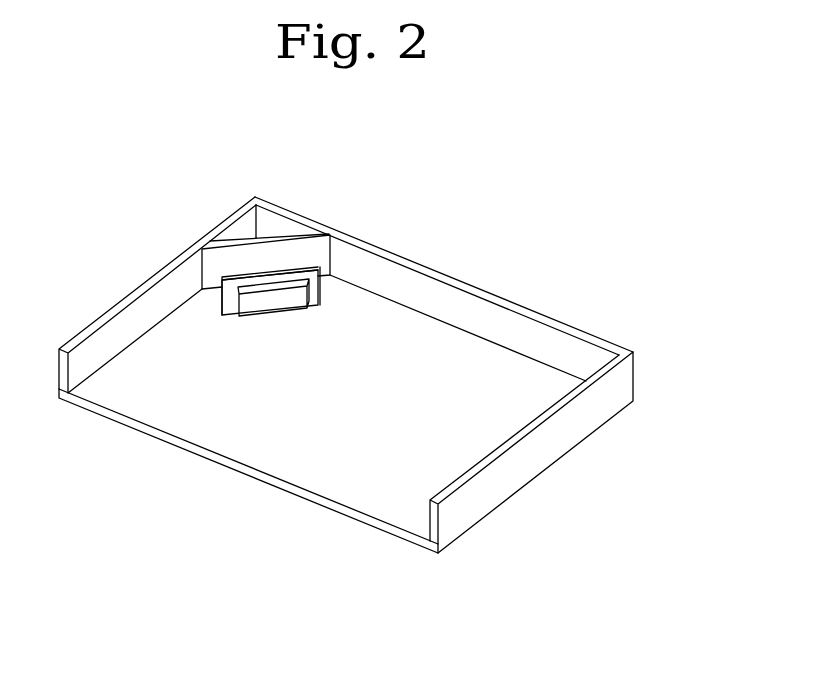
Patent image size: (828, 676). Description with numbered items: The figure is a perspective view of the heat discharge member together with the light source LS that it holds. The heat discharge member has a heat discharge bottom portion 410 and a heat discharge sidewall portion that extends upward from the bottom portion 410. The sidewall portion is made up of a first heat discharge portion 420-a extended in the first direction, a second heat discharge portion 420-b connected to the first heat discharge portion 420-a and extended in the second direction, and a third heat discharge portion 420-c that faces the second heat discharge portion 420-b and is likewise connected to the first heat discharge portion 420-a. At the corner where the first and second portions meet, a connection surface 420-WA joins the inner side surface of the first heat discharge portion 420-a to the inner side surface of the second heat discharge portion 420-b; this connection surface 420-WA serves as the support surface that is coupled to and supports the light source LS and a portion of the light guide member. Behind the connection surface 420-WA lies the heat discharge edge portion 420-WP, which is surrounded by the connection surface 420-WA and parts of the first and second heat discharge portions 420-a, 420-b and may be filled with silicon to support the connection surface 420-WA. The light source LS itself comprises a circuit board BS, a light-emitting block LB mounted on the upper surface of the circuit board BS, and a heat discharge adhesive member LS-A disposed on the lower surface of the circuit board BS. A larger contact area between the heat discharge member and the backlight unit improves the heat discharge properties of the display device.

The heat discharge bottom portion 410 is at (510, 375).
The first heat discharge portion 420-a is at (438, 297).
The second heat discharge portion 420-b is at (166, 297).
The third heat discharge portion 420-c is at (574, 431).
The heat discharge edge portion 420-WP is at (268, 221).
The connection surface 420-WA is at (303, 251).
The light source LS is at (260, 352).
The heat discharge adhesive member LS-A is at (222, 297).
The circuit board BS is at (230, 305).
The light-emitting block LB is at (282, 337).